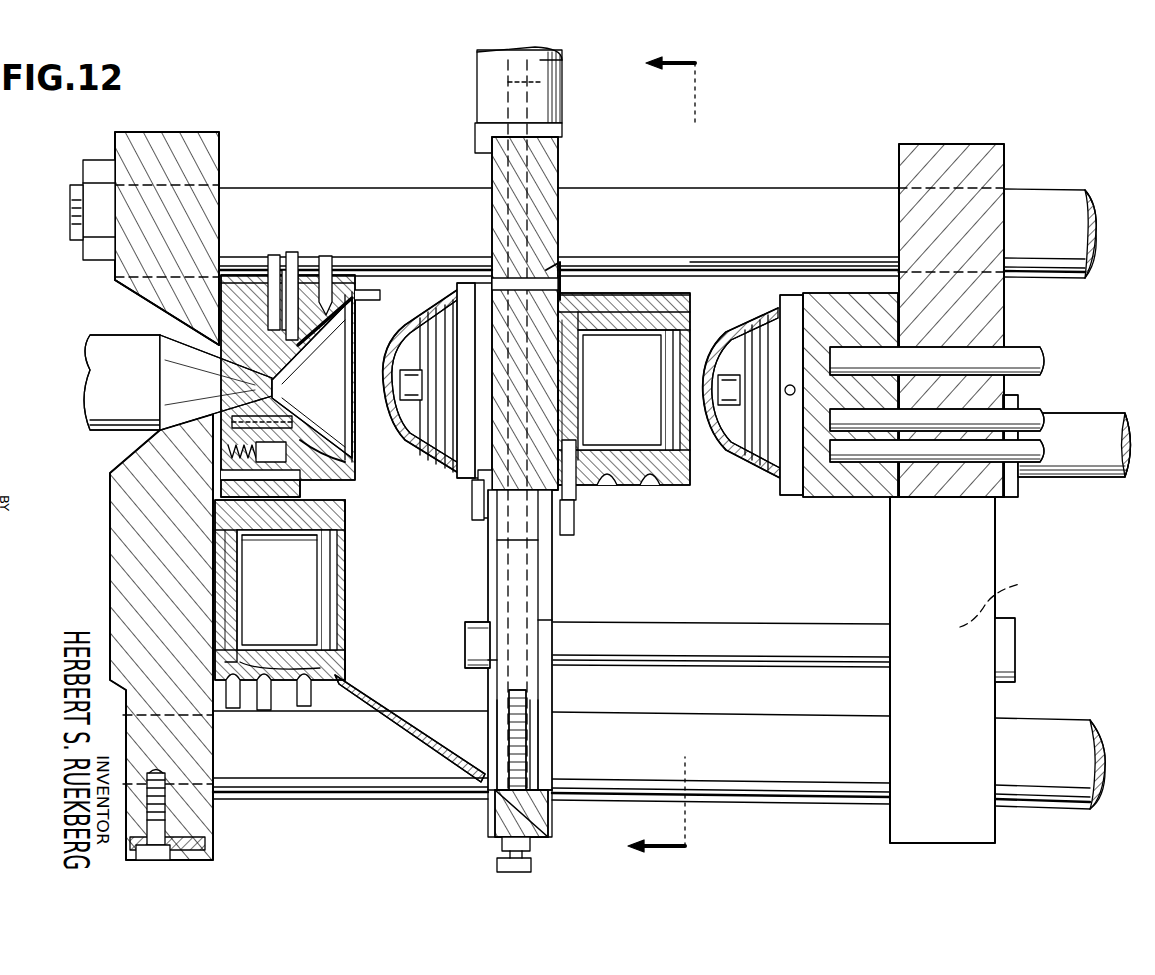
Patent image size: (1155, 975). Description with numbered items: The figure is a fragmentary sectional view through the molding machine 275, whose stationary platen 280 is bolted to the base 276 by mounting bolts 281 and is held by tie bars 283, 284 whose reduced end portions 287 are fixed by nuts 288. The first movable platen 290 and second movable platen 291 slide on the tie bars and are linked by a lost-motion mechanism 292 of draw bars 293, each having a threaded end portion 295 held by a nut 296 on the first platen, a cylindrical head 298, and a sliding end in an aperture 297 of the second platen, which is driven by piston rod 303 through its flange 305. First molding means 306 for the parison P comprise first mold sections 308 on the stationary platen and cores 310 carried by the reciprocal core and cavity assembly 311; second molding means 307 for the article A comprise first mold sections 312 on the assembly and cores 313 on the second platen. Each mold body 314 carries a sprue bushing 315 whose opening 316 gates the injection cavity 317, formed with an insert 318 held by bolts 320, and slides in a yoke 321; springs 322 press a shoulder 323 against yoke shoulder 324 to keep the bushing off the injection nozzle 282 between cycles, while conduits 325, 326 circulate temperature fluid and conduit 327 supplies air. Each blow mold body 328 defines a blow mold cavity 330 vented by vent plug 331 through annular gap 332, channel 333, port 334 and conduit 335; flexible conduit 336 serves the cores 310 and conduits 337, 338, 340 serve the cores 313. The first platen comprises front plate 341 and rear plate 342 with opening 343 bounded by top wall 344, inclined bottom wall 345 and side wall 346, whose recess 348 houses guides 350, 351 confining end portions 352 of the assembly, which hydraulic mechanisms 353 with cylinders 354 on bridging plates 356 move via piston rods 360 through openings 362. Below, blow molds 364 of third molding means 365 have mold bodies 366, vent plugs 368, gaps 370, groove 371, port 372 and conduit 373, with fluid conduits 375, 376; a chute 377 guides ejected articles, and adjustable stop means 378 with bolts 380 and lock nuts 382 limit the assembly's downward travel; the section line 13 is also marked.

The molding machine 275 is at (1074, 106).
The base 276 is at (206, 843).
The stationary platen 280 is at (226, 132).
The mounting bolt / conical concavity 281 is at (118, 283).
The injection nozzle 282 is at (120, 366).
The tie bar 283 is at (438, 214).
The tie bar 284 is at (324, 772).
The reduced end portion 287 is at (77, 216).
The nut 288 is at (96, 160).
The first movable platen 290 is at (562, 556).
The second movable platen 291 is at (1007, 538).
The lost-motion mechanism 292 is at (715, 611).
The draw bar 293 is at (744, 660).
The reduced threaded end portion 295 is at (526, 618).
The nut 296 is at (475, 618).
The aperture 297 is at (1009, 593).
The cylindrical head 298 is at (1022, 626).
The piston rod 303 is at (1092, 418).
The circumferential flange 305 is at (1016, 497).
The first molding means 306 is at (399, 304).
The second molding means 307 is at (760, 266).
The first mold section 308 is at (332, 487).
The core 310 is at (436, 336).
The reciprocal core and cavity assembly 311 is at (563, 300).
The first mold section 312 is at (686, 494).
The core 313 is at (708, 456).
The injection or parison mold body 314 is at (383, 270).
The sprue bushing 315 is at (280, 368).
The opening 316 is at (258, 374).
The injection cavity 317 is at (308, 410).
The insert 318 is at (332, 440).
The bolt 320 is at (230, 424).
The yoke 321 is at (240, 255).
The spring 322 is at (222, 450).
The shoulder 323 is at (226, 278).
The shoulder 324 is at (222, 490).
The conduit 325 is at (289, 253).
The conduit 326 is at (346, 255).
The conduit 327 is at (271, 232).
The mold body 328 is at (628, 480).
The blow mold cavity 330 is at (640, 300).
The vent plug 331 is at (568, 368).
The annular gap 332 is at (572, 450).
The circumferential channel 333 is at (585, 340).
The port 334 is at (509, 496).
The conduit 335 is at (579, 498).
The flexible conduit 336 is at (478, 512).
The conduit 337 is at (1046, 450).
The conduit 338 is at (1040, 408).
The conduit 340 is at (1016, 346).
The front plate 341 is at (490, 674).
The rear plate 342 is at (554, 818).
The rectangular opening 343 is at (560, 757).
The top wall 344 is at (556, 268).
The inclined bottom wall 345 is at (540, 810).
The side wall 346 is at (551, 678).
The recess or channel 348 is at (492, 546).
The guide 350 is at (497, 718).
The guide 351 is at (542, 733).
The end portion 352 is at (492, 285).
The hydraulic mechanism 353 is at (570, 112).
The hydraulic cylinder 354 is at (482, 78).
The bridging plate 356 is at (478, 130).
The piston rod 360 is at (557, 106).
The opening 362 is at (320, 658).
The blow mold 364 is at (346, 530).
The third molding means 365 is at (360, 659).
The mold body 366 is at (277, 534).
The vent plug 368 is at (233, 612).
The port or gap 370 is at (243, 534).
The circumferential groove 371 is at (240, 650).
The port 372 is at (316, 654).
The flexible conduit 373 is at (233, 708).
The temperature control fluid inlet conduit 375 is at (265, 710).
The outlet conduit 376 is at (303, 706).
The inclined guide or chute 377 is at (396, 722).
The adjustable stop means 378 is at (540, 720).
The bolt 380 is at (497, 748).
The lock nut 382 is at (502, 846).
The section line 13- 13 is at (650, 465).
The article A is at (652, 409).
The parison P is at (440, 382).